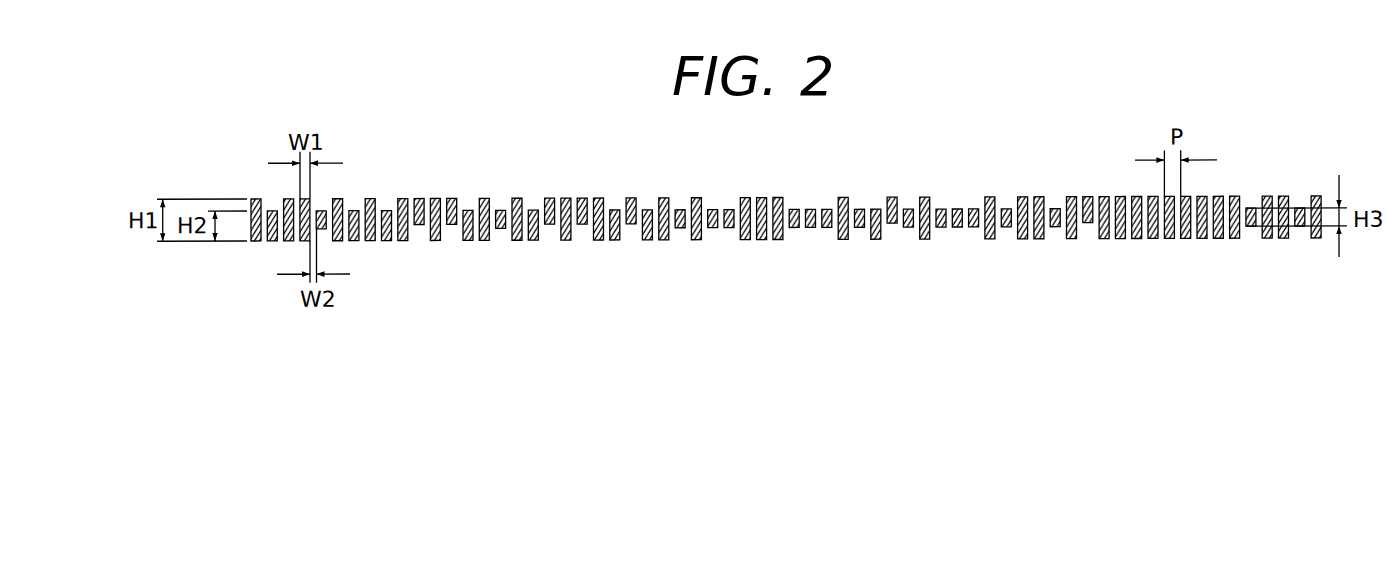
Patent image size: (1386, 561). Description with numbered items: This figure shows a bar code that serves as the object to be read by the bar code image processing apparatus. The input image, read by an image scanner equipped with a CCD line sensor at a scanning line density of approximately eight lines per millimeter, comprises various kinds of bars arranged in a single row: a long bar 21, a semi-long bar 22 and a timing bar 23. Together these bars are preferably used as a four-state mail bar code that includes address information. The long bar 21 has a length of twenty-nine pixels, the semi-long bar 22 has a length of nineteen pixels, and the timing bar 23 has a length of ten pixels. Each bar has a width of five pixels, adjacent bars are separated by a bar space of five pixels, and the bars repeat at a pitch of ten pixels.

The long bar 21 is at (700, 199).
The semi-long bar 22 is at (455, 199).
The timing bar 23 is at (793, 211).